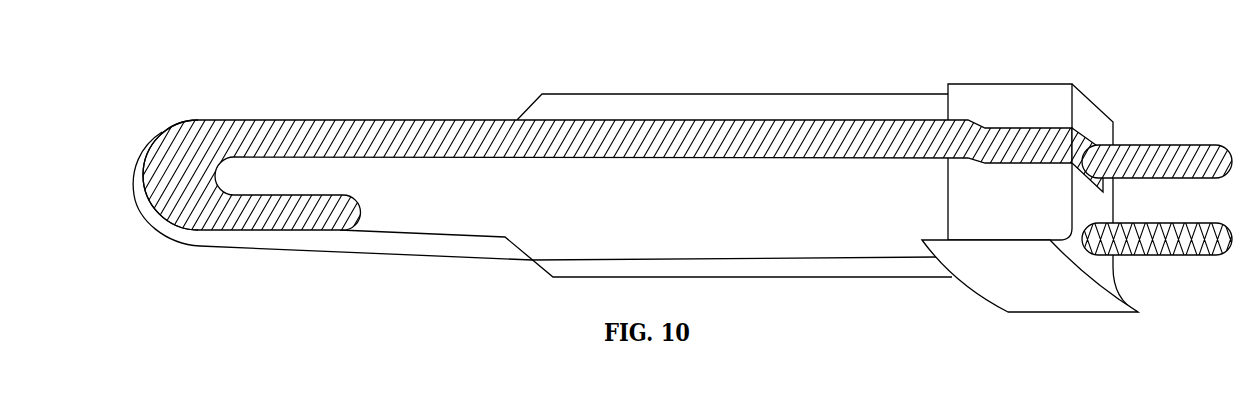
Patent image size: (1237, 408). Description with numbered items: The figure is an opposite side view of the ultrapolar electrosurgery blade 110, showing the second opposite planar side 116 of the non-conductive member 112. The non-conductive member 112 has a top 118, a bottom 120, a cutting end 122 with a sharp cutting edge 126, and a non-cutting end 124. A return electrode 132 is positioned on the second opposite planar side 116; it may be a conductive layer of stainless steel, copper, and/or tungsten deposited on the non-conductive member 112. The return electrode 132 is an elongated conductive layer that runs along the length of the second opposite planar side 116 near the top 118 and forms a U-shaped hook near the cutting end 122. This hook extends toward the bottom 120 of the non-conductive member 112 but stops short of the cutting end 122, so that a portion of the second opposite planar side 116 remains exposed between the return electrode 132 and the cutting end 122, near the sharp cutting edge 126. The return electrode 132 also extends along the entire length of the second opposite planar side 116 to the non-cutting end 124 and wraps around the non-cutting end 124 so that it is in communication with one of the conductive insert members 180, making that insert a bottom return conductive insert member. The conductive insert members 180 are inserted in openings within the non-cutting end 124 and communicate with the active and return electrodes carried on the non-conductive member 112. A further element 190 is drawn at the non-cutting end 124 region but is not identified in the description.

The ultrapolar electrosurgery blade 110 is at (817, 67).
The non-conductive member 112 is at (490, 195).
The second opposite planar side 116 is at (708, 215).
The top 118 is at (792, 267).
The bottom 120 is at (720, 92).
The cutting end 122 is at (133, 203).
The non-cutting end 124 is at (1103, 207).
The sharp cutting edge 126 is at (143, 148).
The return electrode 132 is at (634, 179).
The conductive insert members 180 is at (1165, 142).
The cover sheet 190 is at (1025, 292).